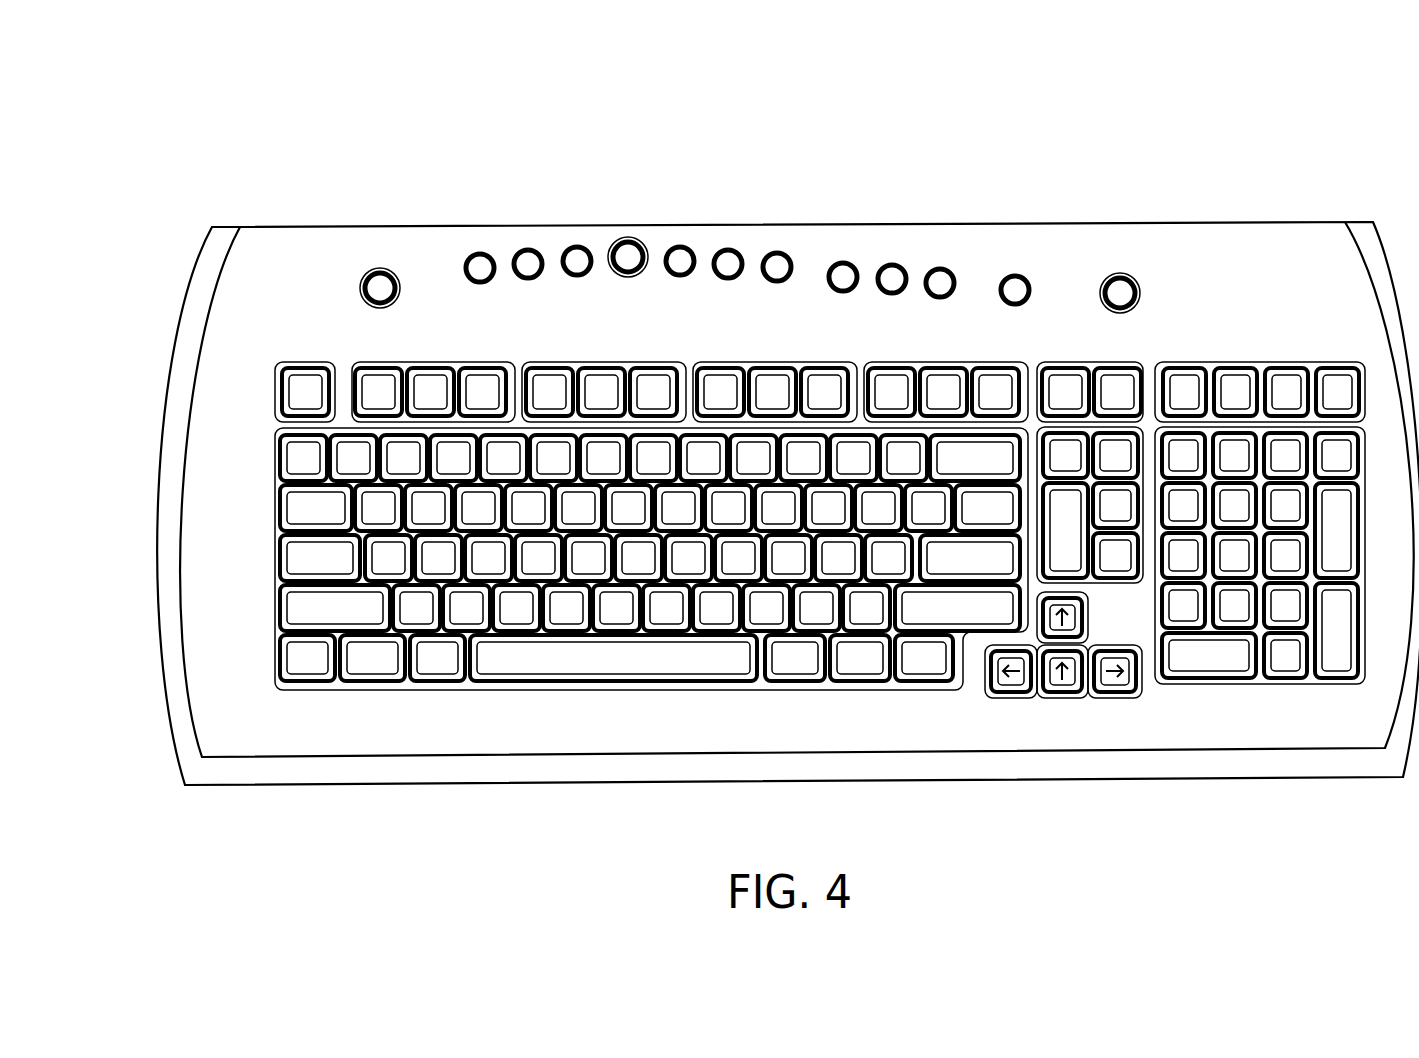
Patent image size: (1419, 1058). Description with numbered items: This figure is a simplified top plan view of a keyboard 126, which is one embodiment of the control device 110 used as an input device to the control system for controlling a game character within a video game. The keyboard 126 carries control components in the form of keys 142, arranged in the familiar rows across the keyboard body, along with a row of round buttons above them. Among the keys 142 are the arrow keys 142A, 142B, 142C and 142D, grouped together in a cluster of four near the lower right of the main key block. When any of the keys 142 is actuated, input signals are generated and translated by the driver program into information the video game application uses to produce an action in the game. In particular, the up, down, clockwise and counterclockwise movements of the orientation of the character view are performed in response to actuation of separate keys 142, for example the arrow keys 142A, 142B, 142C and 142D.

The control device 110 is at (196, 170).
The keyboard 126 is at (1210, 230).
The keys 142 is at (226, 527).
The arrow key 142A is at (988, 690).
The arrow key 142B is at (1062, 688).
The arrow key 142C is at (1130, 685).
The arrow key 142D is at (1087, 620).